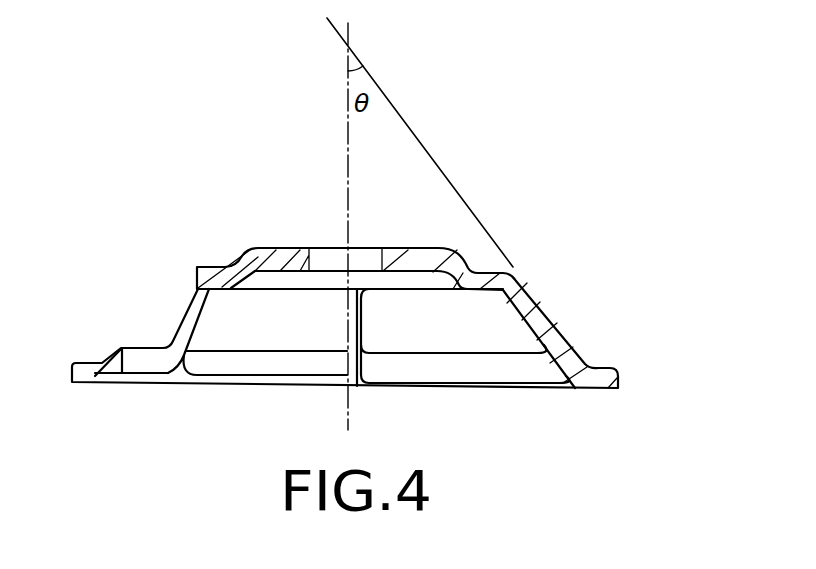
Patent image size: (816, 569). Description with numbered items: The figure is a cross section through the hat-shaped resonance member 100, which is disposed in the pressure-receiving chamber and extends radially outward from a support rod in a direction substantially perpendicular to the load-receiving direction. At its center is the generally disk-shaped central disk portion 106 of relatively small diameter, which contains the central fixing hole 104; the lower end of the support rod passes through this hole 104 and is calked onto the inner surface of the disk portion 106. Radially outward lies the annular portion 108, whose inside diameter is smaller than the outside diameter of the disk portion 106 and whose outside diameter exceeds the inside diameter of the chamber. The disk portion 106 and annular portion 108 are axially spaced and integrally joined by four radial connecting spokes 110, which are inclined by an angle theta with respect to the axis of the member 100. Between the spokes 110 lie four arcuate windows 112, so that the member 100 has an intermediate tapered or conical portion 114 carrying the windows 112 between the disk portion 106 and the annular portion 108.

The hat-shaped resonance member 100 is at (192, 202).
The central fixing hole 104 is at (373, 252).
The central disk portion 106 is at (290, 236).
The annular portion 108 is at (607, 348).
The radial connecting spokes 110 is at (183, 320).
The arcuate windows 112 is at (264, 360).
The tapered or conical portion 114 is at (581, 311).